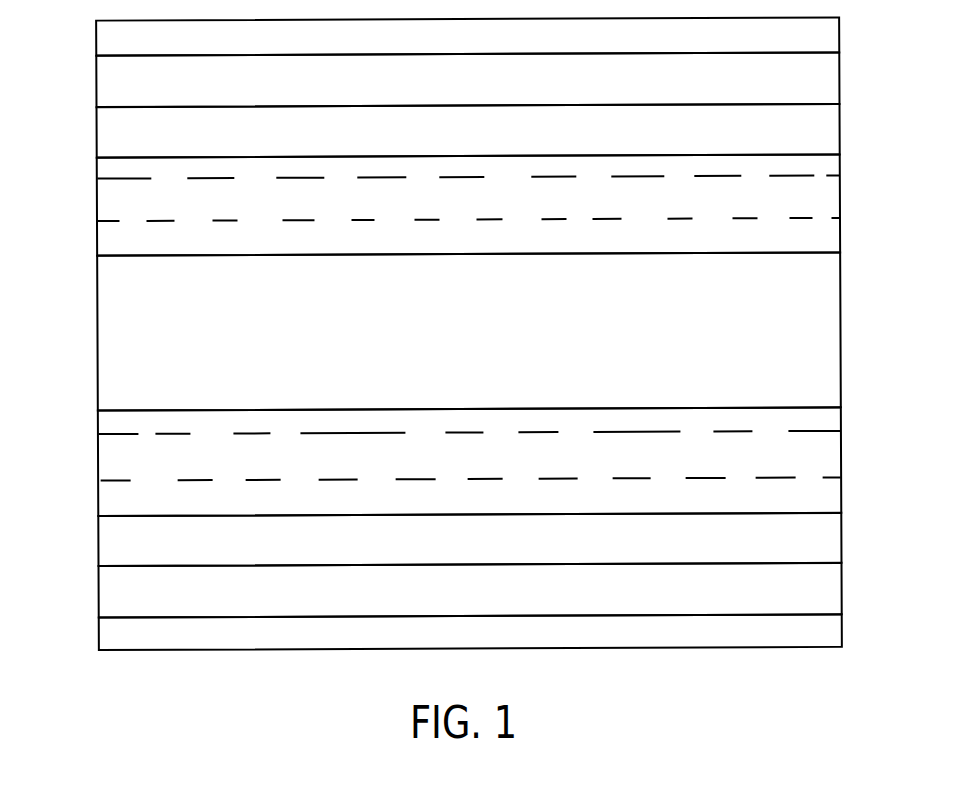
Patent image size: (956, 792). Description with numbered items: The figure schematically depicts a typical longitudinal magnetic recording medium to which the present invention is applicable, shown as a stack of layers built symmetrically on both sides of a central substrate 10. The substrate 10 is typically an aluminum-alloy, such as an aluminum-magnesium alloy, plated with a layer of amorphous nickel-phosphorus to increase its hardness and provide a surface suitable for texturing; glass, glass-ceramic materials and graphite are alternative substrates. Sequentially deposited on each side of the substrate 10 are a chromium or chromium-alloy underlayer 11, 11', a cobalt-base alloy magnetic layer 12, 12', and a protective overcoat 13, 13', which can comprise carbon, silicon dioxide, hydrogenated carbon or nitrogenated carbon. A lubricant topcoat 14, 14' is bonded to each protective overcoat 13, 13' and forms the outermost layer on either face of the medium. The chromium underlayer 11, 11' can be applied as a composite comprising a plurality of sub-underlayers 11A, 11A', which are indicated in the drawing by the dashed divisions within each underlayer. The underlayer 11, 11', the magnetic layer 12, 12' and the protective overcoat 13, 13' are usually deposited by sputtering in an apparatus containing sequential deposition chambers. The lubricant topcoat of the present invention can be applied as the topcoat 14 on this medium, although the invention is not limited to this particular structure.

The substrate 10 is at (414, 342).
The underlayer 11 is at (496, 204).
The sub-underlayers 11A is at (429, 204).
The magnetic layer 12 is at (468, 131).
The protective overcoat 13 is at (467, 79).
The lubricant topcoat 14 is at (467, 36).
The underlayer 11' is at (505, 461).
The sub-underlayers 11A' is at (427, 456).
The magnetic layer 12' is at (469, 539).
The protective overcoat 13' is at (470, 590).
The lubricant topcoat 14' is at (470, 632).